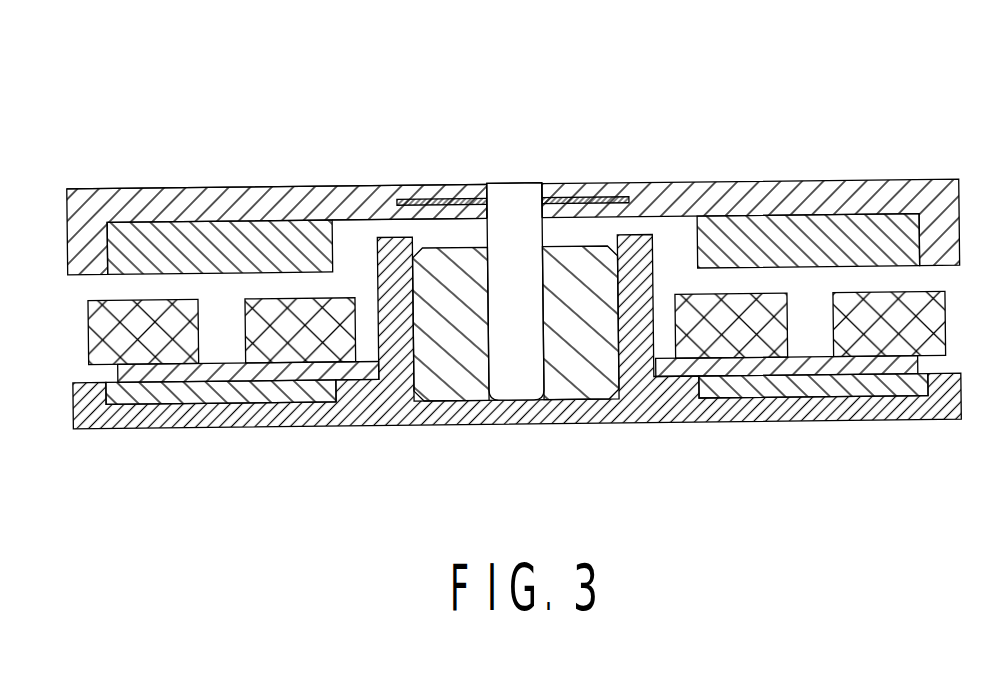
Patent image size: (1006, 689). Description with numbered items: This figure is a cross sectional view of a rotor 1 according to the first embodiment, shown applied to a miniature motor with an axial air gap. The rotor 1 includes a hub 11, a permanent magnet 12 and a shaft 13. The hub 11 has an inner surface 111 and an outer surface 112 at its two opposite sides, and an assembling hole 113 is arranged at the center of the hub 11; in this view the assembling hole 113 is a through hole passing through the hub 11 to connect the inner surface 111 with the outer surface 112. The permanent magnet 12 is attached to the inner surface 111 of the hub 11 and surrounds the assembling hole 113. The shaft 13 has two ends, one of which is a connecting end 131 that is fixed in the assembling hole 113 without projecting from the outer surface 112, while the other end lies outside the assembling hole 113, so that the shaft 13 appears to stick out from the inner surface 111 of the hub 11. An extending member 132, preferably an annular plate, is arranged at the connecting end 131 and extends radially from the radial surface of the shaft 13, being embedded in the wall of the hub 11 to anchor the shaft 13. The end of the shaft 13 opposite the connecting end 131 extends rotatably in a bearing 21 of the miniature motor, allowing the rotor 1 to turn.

The rotor 1 is at (103, 134).
The hub 11 is at (790, 193).
The inner surface 111 is at (358, 236).
The outer surface 112 is at (225, 188).
The assembling hole 113 is at (494, 187).
The permanent magnet 12 is at (873, 223).
The shaft 13 is at (522, 372).
The connecting end 131 is at (522, 198).
The extending member 132 is at (605, 193).
The bearing 21 is at (458, 352).